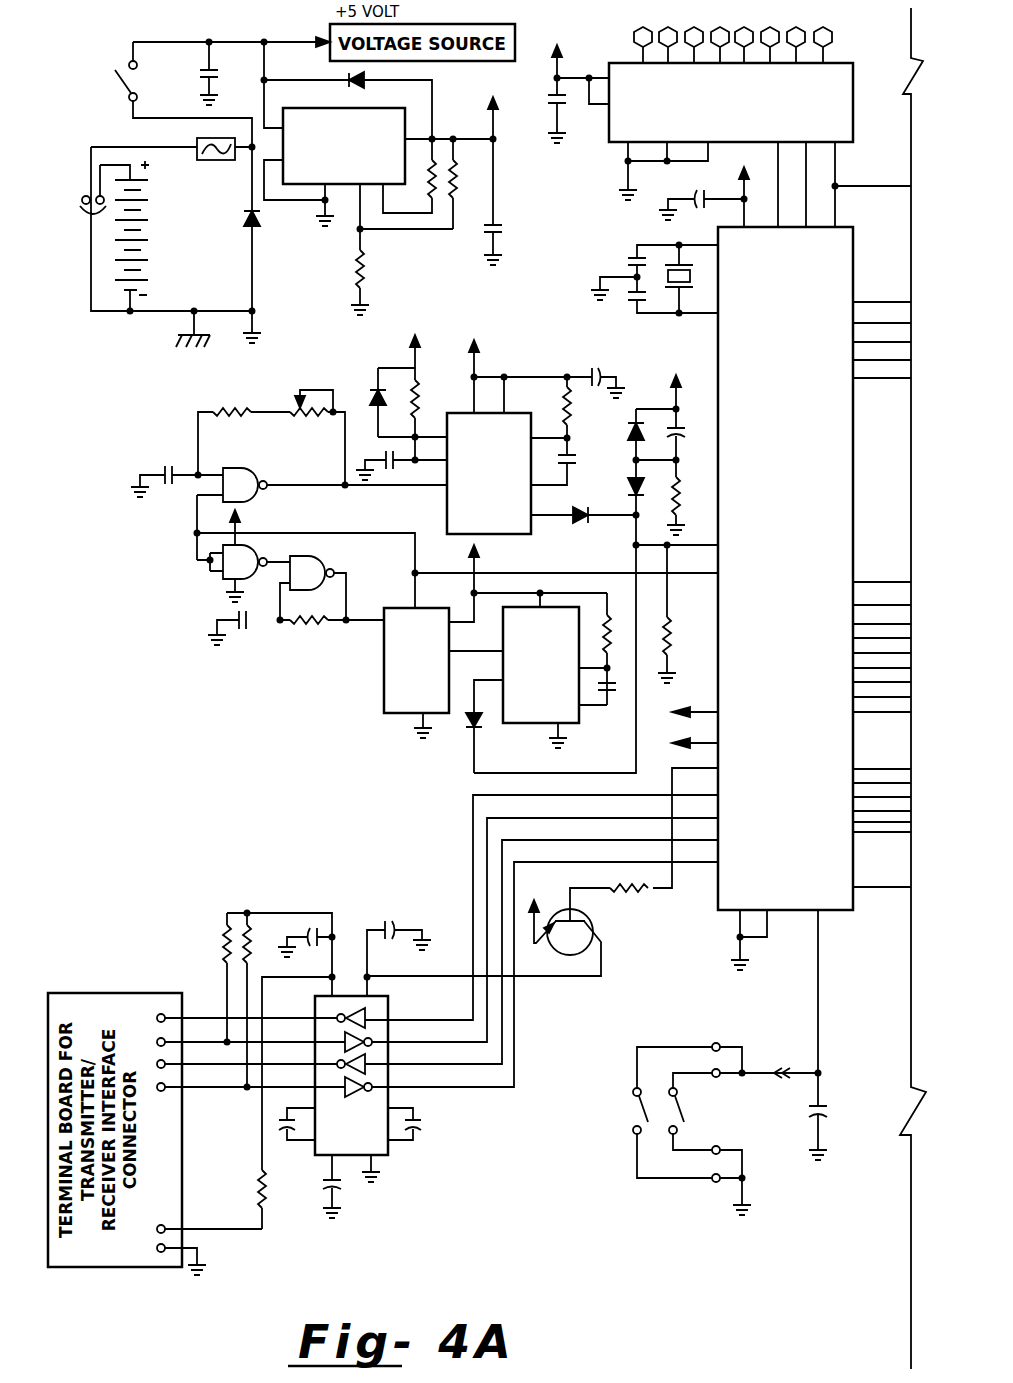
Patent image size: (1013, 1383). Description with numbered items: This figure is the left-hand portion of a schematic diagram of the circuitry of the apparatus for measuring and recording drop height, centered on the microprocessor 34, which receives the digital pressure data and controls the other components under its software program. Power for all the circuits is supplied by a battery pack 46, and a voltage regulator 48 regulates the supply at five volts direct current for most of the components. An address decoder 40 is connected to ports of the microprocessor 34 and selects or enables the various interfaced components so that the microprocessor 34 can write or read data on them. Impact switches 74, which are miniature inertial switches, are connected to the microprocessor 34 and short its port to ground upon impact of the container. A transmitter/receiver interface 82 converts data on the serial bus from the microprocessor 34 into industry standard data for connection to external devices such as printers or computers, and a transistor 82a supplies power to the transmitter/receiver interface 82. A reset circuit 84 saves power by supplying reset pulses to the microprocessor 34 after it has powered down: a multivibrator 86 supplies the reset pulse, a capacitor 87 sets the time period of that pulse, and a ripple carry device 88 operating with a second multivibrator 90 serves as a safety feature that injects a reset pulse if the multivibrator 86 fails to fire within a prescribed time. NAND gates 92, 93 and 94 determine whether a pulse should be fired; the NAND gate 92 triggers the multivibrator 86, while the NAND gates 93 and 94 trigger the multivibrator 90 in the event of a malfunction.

The microprocessor 34 is at (757, 428).
The address decoder 40 is at (615, 126).
The battery pack 46 is at (102, 315).
The voltage regulator 48 is at (343, 172).
The impact switches 74 is at (655, 1180).
The transmitter/receiver interface 82 is at (380, 1147).
The transistor 82a is at (596, 933).
The reset circuit 84 is at (190, 625).
The multivibrator 86 is at (447, 505).
The capacitor 87 is at (164, 467).
The ripple carry device 88 is at (384, 678).
The multivibrator 90 is at (528, 723).
The NAND gate 92 is at (238, 466).
The NAND gate 93 is at (223, 580).
The NAND gate 94 is at (324, 556).